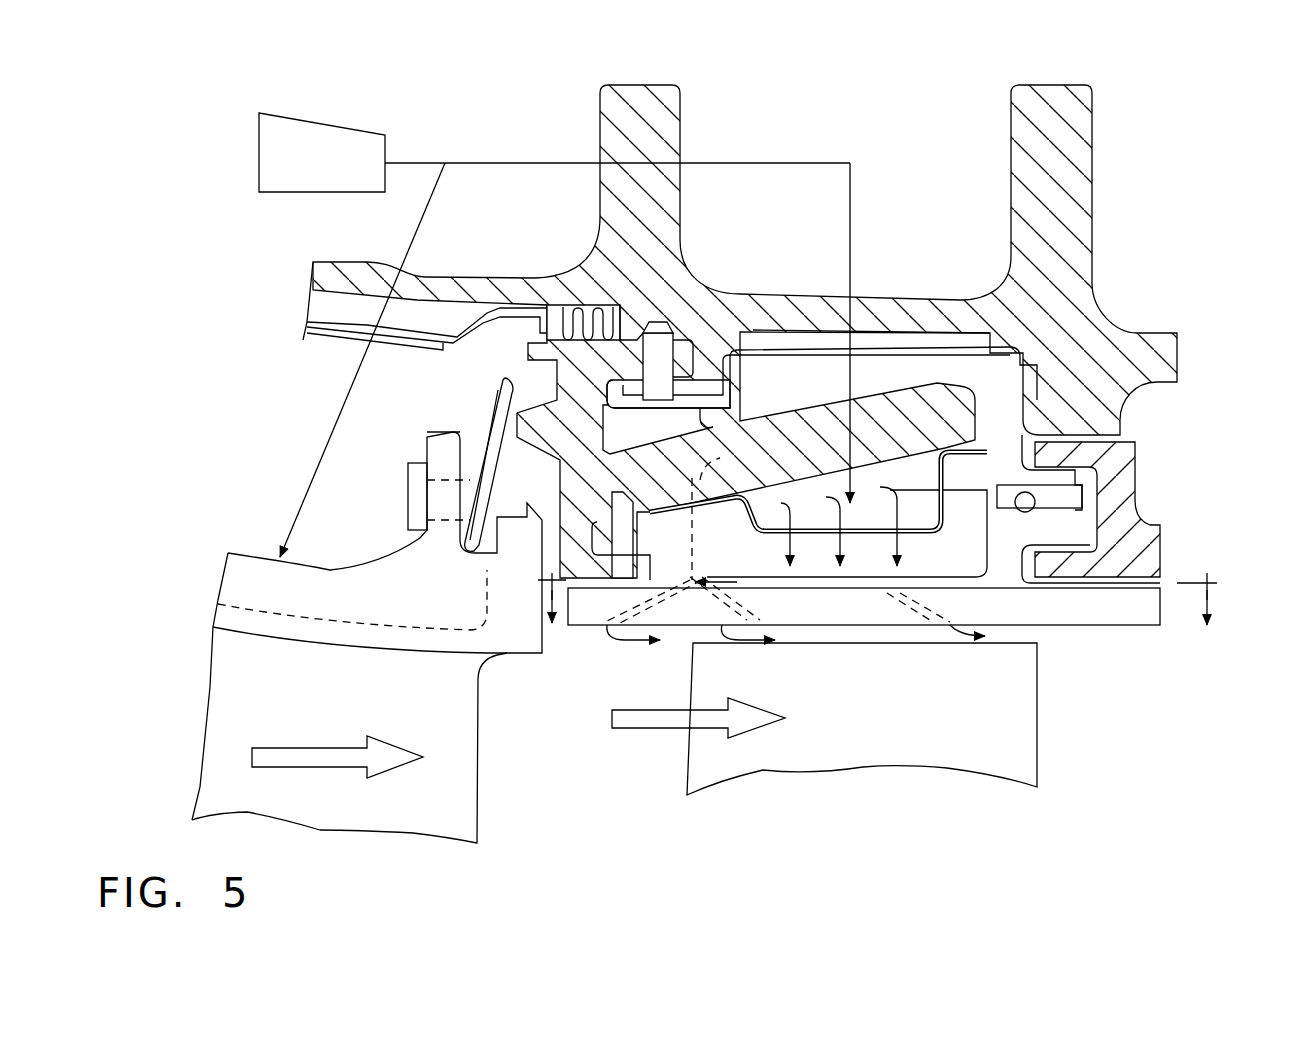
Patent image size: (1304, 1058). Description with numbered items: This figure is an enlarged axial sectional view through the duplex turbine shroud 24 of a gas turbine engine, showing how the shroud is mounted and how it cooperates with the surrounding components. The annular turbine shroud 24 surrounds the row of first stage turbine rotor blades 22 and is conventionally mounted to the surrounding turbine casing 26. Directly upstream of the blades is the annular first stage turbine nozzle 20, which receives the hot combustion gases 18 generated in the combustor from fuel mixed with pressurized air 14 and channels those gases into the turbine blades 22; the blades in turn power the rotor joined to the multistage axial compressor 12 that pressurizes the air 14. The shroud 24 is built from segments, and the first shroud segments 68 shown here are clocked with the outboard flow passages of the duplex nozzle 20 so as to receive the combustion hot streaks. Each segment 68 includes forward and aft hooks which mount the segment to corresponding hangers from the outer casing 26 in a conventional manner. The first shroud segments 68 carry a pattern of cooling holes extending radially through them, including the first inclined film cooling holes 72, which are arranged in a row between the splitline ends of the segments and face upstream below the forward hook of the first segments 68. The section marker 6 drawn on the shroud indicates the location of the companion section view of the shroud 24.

The multistage axial compressor 12 is at (554, 152).
The pressurized air 14 is at (855, 250).
The hot combustion gases 18 is at (322, 747).
The first stage turbine nozzle 20 is at (252, 550).
The first stage turbine rotor blades 22 is at (862, 719).
The turbine shroud 24 is at (1150, 437).
The turbine casing 26 is at (905, 300).
The first shroud segments 68 is at (864, 608).
The first inclined film cooling holes 72 is at (658, 612).
The section line 6- 6 is at (877, 615).